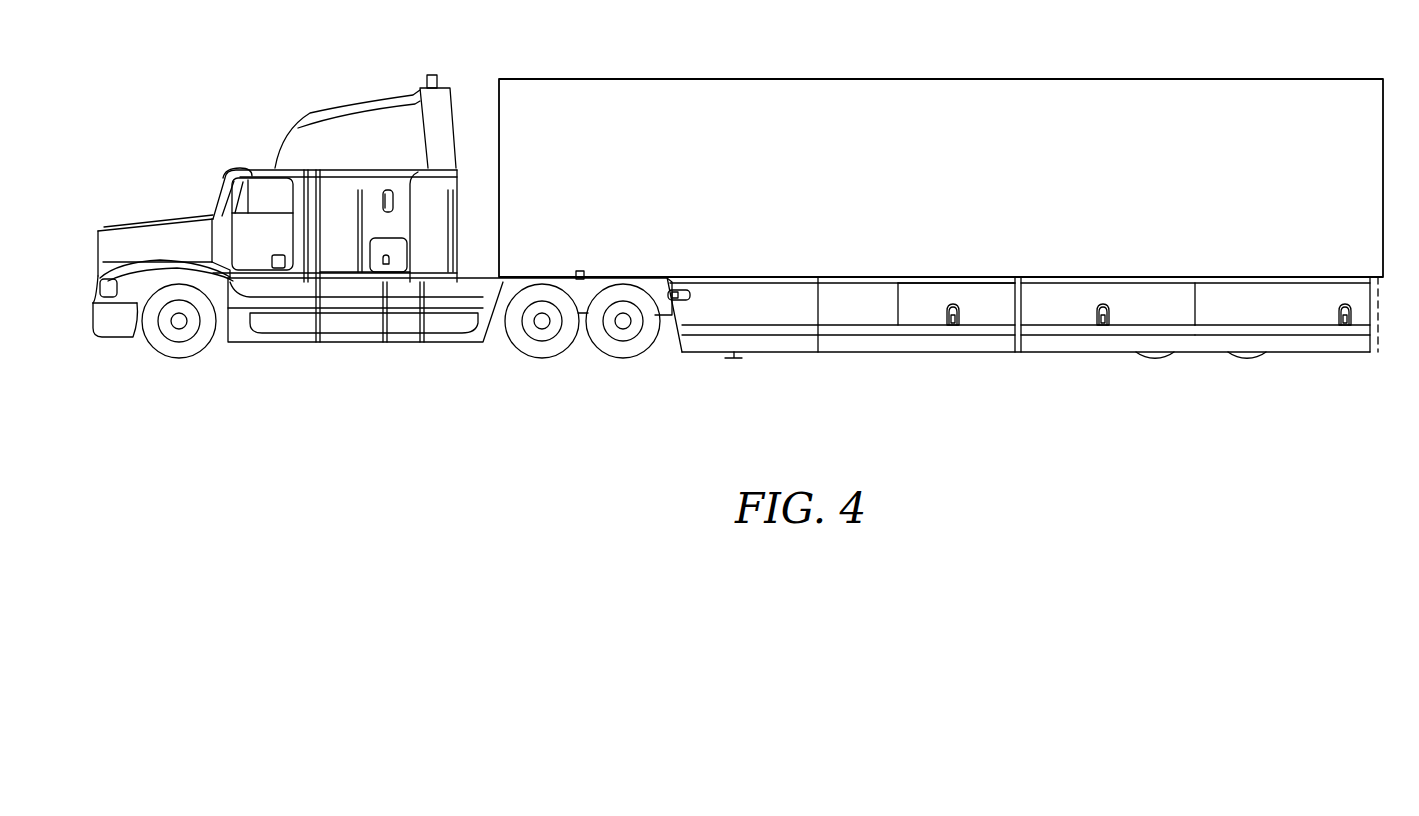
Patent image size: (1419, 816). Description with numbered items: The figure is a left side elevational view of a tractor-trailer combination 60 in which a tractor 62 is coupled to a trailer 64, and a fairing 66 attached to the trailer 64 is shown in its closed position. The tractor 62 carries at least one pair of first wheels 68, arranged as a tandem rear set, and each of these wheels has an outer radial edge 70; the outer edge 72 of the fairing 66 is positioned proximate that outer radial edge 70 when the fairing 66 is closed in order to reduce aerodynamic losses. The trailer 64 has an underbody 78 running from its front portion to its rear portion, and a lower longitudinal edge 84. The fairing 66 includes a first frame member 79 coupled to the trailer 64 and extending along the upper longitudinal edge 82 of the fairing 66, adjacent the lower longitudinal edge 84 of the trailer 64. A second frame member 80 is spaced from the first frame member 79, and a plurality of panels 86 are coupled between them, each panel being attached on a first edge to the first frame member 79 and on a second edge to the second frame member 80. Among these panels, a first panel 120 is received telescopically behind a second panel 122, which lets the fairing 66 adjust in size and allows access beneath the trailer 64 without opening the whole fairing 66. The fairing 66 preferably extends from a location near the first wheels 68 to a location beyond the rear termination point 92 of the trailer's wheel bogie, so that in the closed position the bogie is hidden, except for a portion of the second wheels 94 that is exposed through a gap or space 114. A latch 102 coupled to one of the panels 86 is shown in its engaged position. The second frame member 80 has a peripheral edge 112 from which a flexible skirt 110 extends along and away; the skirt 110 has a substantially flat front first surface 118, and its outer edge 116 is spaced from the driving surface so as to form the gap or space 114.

The tractor-trailer combination 60 is at (486, 64).
The tractor 62 is at (213, 162).
The trailer 64 is at (946, 61).
The fairing 66 is at (880, 317).
The first wheels 68 is at (664, 374).
The outer radial edge 70 is at (656, 348).
The outer edge 72 is at (670, 333).
The underbody 78 is at (860, 287).
The first frame member 79 is at (1337, 280).
The second frame member 80 is at (1335, 330).
The upper longitudinal edge 82 is at (1221, 282).
The lower longitudinal edge 84 is at (1090, 283).
The panels 86 is at (741, 297).
The rear termination point 92 is at (1381, 332).
The second wheels 94 is at (1275, 366).
The latch 102 is at (955, 338).
The skirt 110 is at (1041, 347).
The peripheral edge 112 is at (1093, 325).
The gap or space 114 is at (750, 361).
The outer edge 116 is at (807, 352).
The first surface 118 is at (1295, 355).
The first panel 120 is at (985, 293).
The second panel 122 is at (1150, 290).